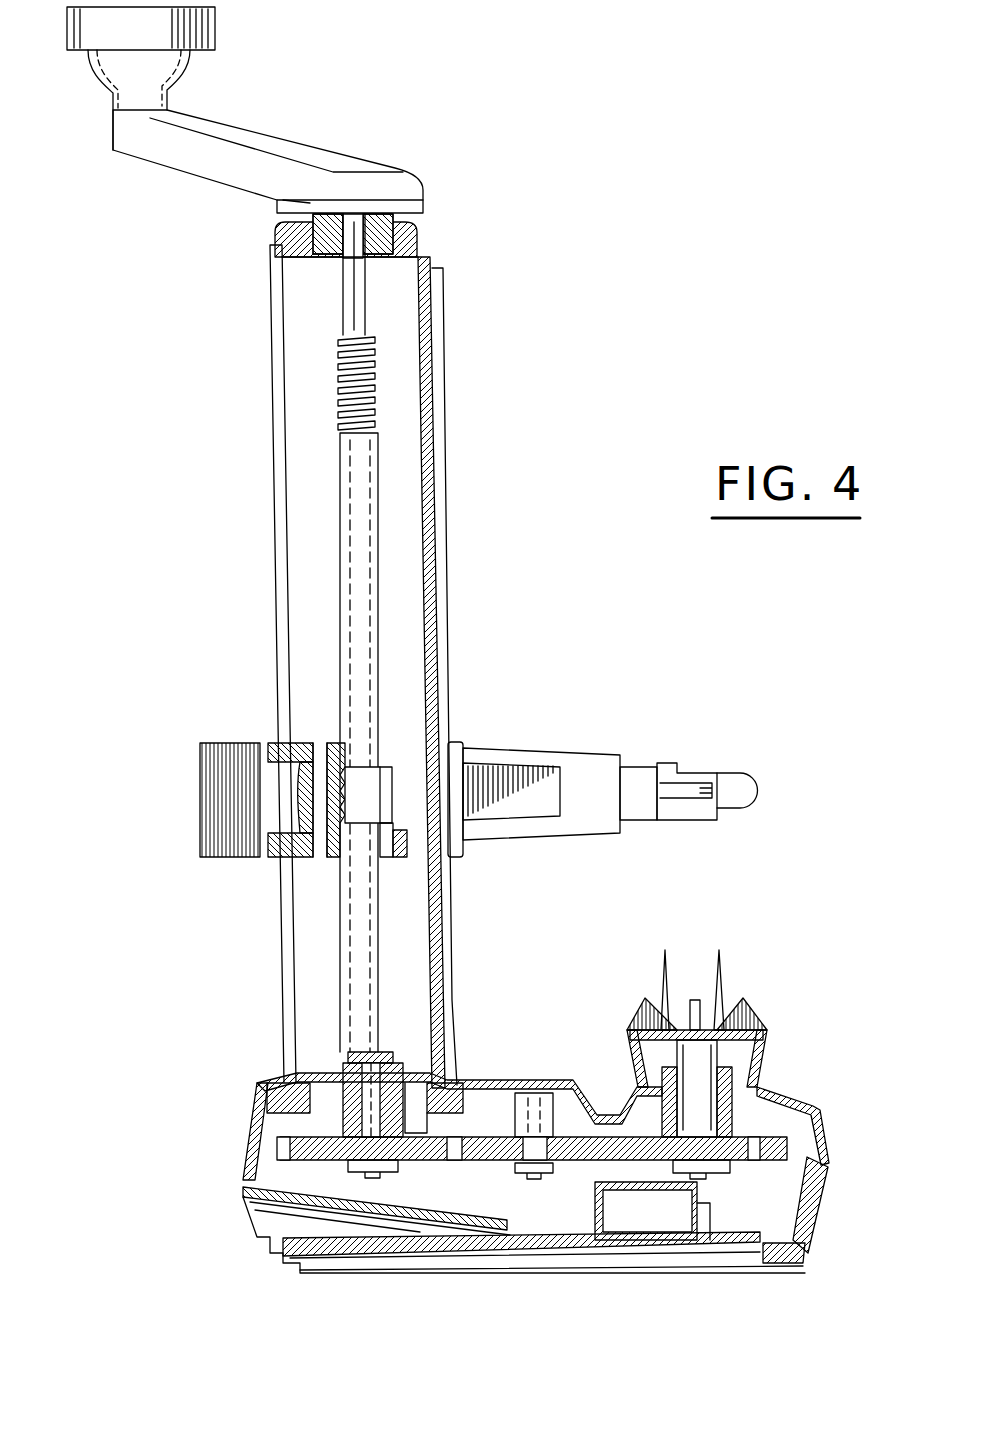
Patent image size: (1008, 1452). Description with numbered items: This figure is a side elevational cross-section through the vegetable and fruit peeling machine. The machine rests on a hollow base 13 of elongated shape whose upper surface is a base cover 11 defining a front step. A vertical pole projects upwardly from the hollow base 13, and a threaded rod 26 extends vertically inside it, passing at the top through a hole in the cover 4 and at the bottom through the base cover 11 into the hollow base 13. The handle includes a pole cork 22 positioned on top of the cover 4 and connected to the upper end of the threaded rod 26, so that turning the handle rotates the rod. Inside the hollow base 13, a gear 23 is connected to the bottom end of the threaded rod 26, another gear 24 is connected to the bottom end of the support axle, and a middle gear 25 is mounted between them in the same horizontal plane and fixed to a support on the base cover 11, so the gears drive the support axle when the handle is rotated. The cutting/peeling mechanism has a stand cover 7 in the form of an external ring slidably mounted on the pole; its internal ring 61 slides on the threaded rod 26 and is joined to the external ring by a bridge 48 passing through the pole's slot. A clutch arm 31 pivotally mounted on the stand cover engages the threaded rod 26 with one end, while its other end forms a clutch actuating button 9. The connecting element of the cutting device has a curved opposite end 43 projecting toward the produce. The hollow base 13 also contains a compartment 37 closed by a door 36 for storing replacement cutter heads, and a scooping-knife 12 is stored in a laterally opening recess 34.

The pole cork 22 is at (413, 183).
The cover 4 is at (425, 232).
The threaded rod 26 is at (378, 400).
The clutch actuating button 9 is at (215, 745).
The clutch arm 31 is at (280, 810).
The bridge 48 is at (310, 857).
The opposite end of the connecting element 43 is at (370, 777).
The stand cover 7 is at (455, 748).
The internal ring 61 is at (400, 860).
The gear 23 is at (257, 1133).
The recess 34 is at (247, 1178).
The scooping-knife 12 is at (257, 1220).
The middle gear 25 is at (583, 1165).
The gear 24 is at (743, 1160).
The base cover 11 is at (823, 1130).
The hollow base 13 is at (818, 1222).
The door 36 is at (623, 1243).
The compartment 37 is at (662, 1210).